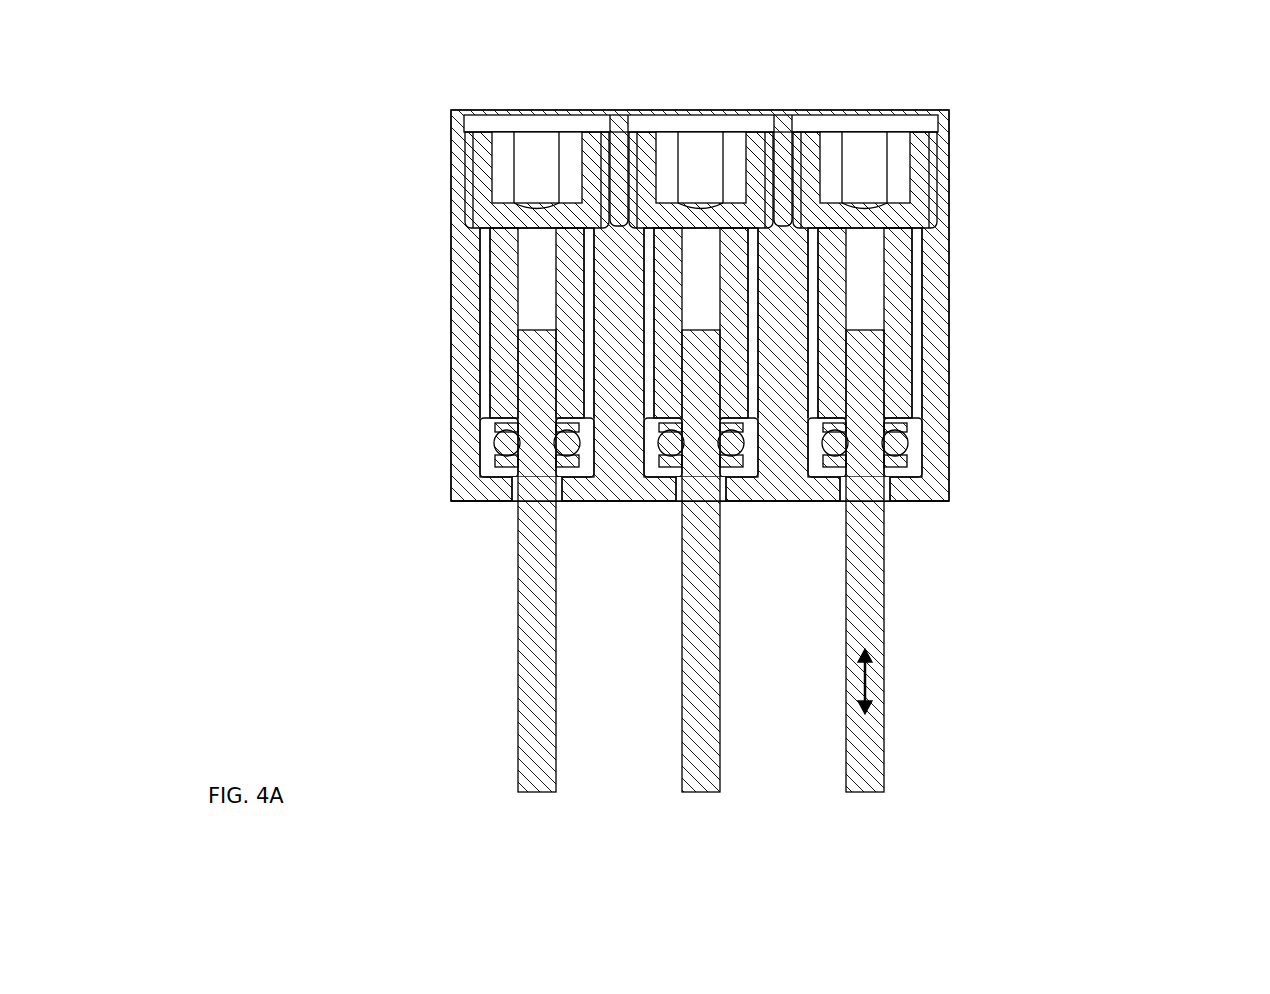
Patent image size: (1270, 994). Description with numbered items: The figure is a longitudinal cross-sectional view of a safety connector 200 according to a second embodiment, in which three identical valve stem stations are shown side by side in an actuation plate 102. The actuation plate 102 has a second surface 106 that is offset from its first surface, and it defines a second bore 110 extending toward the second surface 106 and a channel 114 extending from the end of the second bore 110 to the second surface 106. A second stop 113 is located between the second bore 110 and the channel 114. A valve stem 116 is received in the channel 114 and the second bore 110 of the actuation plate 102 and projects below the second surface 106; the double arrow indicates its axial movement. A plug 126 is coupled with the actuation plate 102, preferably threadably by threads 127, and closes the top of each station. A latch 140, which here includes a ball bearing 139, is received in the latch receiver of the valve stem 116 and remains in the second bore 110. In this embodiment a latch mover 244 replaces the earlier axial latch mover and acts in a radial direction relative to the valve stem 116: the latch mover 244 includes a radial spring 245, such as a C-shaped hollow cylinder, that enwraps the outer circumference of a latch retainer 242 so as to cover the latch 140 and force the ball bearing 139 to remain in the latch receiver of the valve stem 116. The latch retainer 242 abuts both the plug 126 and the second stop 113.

The safety connector 200 is at (358, 97).
The actuation plate 102 is at (450, 297).
The second surface 106 is at (497, 503).
The second bore 110 is at (483, 368).
The second stop 113 is at (903, 475).
The channel 114 is at (513, 487).
The valve stem 116 is at (885, 679).
The plug 126 is at (923, 150).
The threads 127 is at (940, 185).
The ball bearing 139 is at (903, 441).
The latch 140 is at (1085, 402).
The latch retainer 242 is at (907, 367).
The latch mover 244 is at (1086, 549).
The radial spring 245 is at (905, 463).